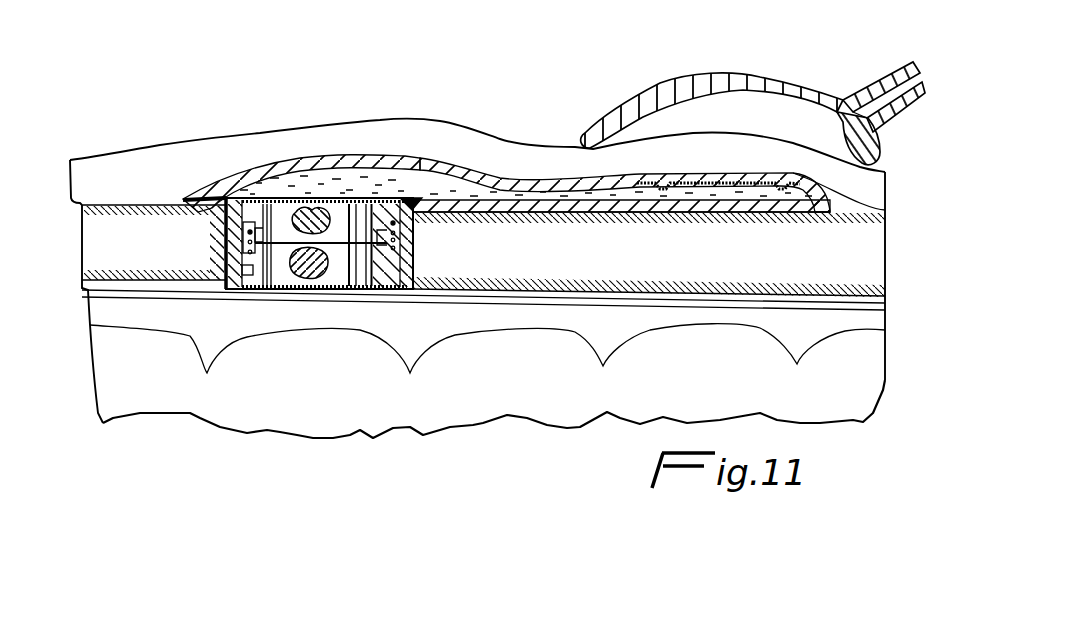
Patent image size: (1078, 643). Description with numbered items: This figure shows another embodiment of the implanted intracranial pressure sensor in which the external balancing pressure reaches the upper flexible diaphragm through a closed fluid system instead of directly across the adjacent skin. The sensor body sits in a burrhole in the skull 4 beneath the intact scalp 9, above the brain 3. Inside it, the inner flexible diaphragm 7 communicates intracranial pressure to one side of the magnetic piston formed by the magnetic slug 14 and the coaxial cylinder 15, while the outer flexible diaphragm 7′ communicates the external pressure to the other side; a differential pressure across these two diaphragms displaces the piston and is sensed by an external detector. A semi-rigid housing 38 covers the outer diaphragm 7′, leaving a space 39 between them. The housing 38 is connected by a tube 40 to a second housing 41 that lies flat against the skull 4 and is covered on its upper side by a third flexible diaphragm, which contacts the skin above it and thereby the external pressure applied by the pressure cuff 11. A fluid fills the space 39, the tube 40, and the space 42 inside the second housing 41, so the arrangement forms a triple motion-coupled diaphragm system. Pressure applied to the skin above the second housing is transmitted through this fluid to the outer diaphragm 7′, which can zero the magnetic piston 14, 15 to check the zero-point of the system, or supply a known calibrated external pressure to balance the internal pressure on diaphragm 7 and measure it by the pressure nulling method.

The brain 3 is at (482, 362).
The skull 4 is at (577, 252).
The inner flexible diaphragm 7 is at (348, 288).
The outer flexible diaphragm 7′ is at (348, 198).
The scalp 9 is at (173, 165).
The pressure cuff 11 is at (738, 72).
The magnetic slug 14 is at (287, 280).
The coaxial cylinder 15 is at (285, 217).
The semi-rigid housing 38 is at (338, 165).
The space 39 is at (297, 183).
The tube 40 is at (497, 183).
The second housing 41 is at (633, 183).
The space inside second housing 42 is at (752, 196).